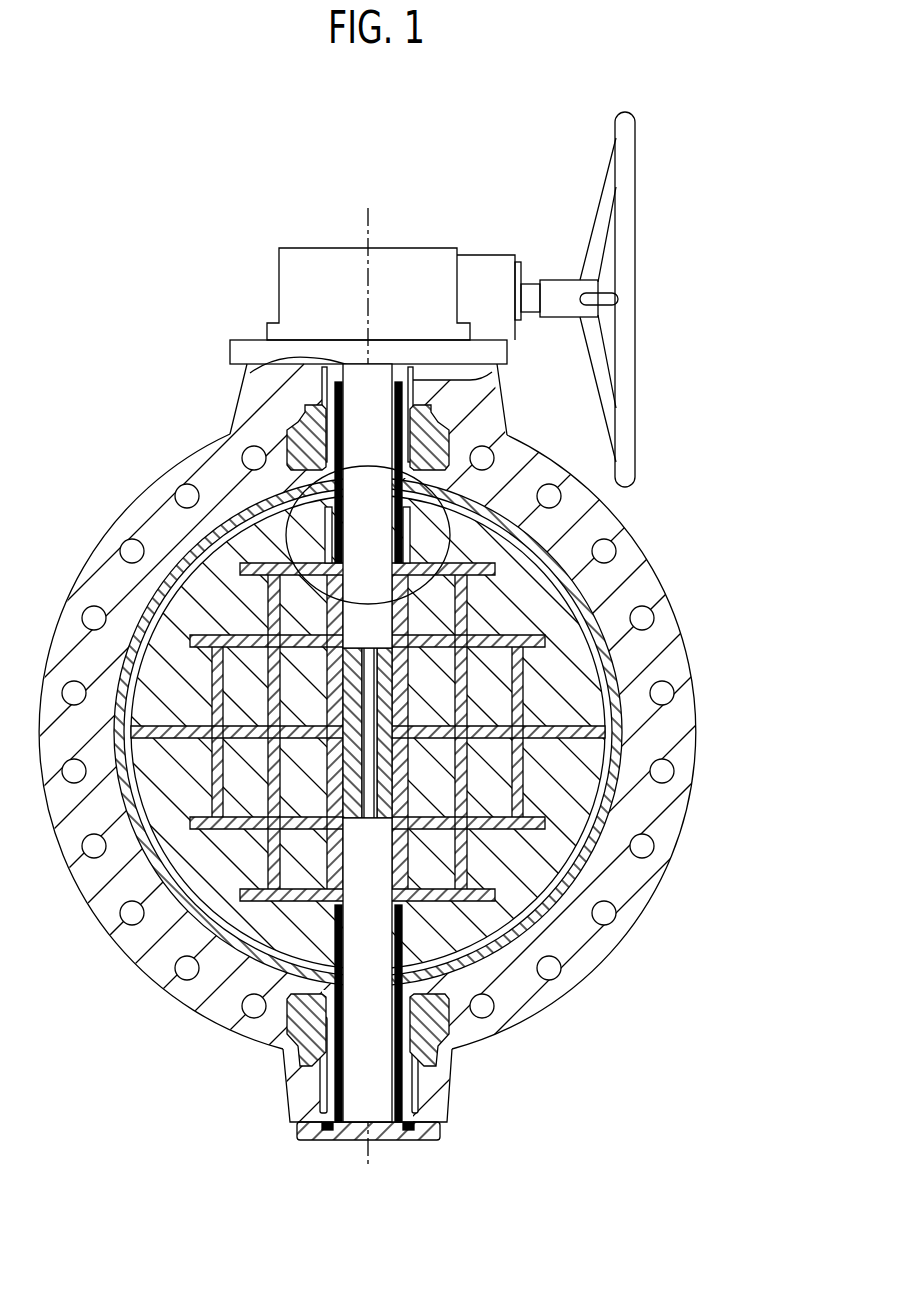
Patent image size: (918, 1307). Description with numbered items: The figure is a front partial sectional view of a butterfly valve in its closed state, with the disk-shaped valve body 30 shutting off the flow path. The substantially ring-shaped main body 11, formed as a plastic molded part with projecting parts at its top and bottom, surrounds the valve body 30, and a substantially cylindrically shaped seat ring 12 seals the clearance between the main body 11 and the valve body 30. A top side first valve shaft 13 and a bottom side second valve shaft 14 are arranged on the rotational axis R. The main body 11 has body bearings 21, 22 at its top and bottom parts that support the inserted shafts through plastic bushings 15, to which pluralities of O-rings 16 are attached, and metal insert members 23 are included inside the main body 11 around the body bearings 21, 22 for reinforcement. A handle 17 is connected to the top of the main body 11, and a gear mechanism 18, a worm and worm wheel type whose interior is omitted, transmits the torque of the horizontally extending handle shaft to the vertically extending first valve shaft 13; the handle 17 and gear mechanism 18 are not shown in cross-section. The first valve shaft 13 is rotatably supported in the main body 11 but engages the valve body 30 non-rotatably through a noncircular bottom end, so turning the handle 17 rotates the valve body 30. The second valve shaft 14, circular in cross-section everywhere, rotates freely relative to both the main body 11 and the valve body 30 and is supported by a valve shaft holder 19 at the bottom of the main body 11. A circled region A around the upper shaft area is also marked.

The main body 11 is at (655, 580).
The seat ring 12 is at (618, 748).
The first valve shaft 13 is at (355, 412).
The second valve shaft 14 is at (358, 1058).
The bushing 15 is at (445, 440).
The O-ring 16 is at (420, 415).
The handle 17 is at (625, 172).
The gear mechanism 18 is at (425, 248).
The valve shaft holder 19 is at (318, 1132).
The body bearing 21 is at (352, 440).
The body bearing 22 is at (395, 1080).
The metal insert member 23 is at (300, 440).
The valve body 30 is at (585, 660).
The region A is at (290, 520).
The rotational axis R is at (365, 222).